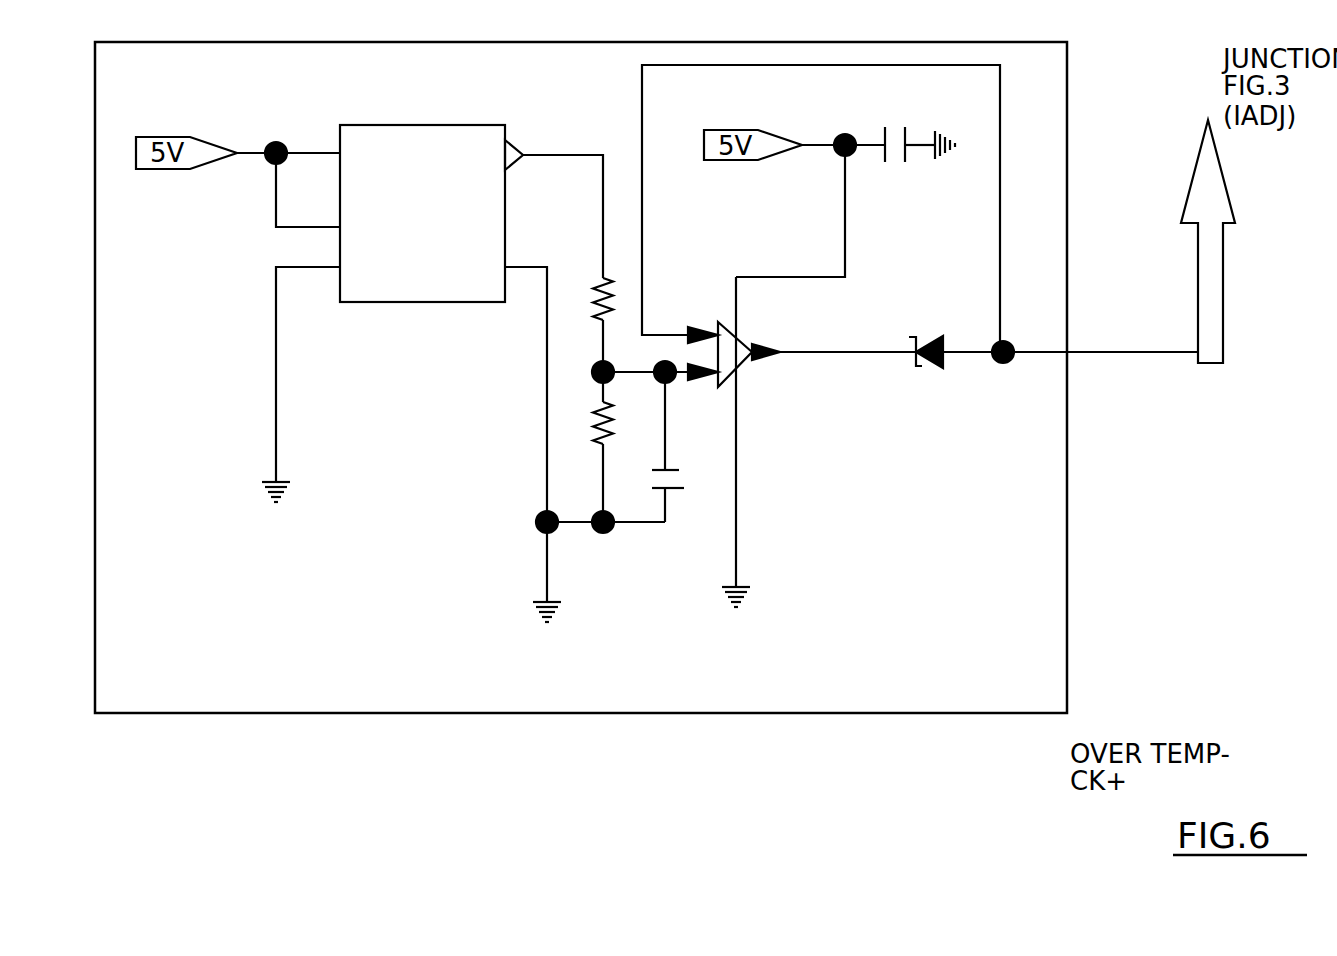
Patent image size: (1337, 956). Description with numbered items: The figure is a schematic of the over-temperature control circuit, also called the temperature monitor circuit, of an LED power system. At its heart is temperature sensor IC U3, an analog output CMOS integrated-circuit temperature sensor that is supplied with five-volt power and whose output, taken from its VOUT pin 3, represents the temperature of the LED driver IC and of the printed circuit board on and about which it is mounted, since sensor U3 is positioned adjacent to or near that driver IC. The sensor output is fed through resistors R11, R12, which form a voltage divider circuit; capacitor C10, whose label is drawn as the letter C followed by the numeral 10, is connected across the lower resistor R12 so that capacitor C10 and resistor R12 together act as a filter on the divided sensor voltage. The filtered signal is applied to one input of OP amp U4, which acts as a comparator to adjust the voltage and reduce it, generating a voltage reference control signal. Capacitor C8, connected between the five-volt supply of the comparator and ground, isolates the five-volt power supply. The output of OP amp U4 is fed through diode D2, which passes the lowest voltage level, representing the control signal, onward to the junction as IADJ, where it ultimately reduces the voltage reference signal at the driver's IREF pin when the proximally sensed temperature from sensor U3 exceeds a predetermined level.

The temperature sensor IC U3 is at (431, 195).
The OP amp U4 is at (742, 338).
The resistor R11 is at (586, 286).
The resistor R12 is at (630, 432).
The capacitor C10 is at (694, 447).
The capacitor C10 10 is at (694, 447).
The capacitor C8 is at (918, 126).
The diode D2 is at (910, 364).
The VOUT pin 3 of U3 3 is at (563, 199).